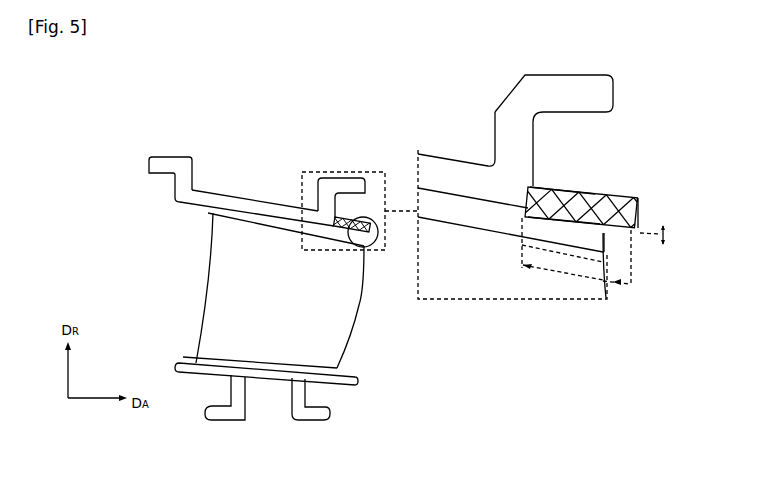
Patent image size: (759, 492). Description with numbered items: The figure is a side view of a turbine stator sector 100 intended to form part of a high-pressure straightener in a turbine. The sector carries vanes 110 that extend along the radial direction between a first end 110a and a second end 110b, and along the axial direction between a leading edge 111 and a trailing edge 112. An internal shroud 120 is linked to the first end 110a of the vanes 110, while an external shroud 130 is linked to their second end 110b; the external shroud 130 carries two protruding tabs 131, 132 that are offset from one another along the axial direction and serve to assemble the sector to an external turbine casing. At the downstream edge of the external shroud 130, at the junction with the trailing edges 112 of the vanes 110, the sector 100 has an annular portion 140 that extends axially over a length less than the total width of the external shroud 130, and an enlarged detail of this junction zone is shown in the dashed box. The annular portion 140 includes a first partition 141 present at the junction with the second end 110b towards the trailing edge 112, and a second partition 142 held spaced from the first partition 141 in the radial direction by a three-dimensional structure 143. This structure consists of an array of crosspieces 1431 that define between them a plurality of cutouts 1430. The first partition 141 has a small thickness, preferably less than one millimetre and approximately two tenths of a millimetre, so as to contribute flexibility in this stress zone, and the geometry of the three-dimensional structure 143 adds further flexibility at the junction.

The turbine stator sector 100 is at (127, 167).
The vane 110 is at (399, 289).
The first end 110a is at (264, 361).
The second end 110b is at (226, 210).
The leading edge 111 is at (208, 313).
The trailing edge 112 is at (357, 322).
The internal shroud 120 is at (344, 385).
The external shroud 130 is at (253, 200).
The protruding tab 131 is at (168, 165).
The protruding tab 132 is at (343, 177).
The annular portion 140 is at (625, 189).
The first partition 141 is at (605, 240).
The second partition 142 is at (596, 190).
The three-dimensional structure 143 is at (640, 208).
The cutout 1430 is at (566, 210).
The crosspiece 1431 is at (558, 188).